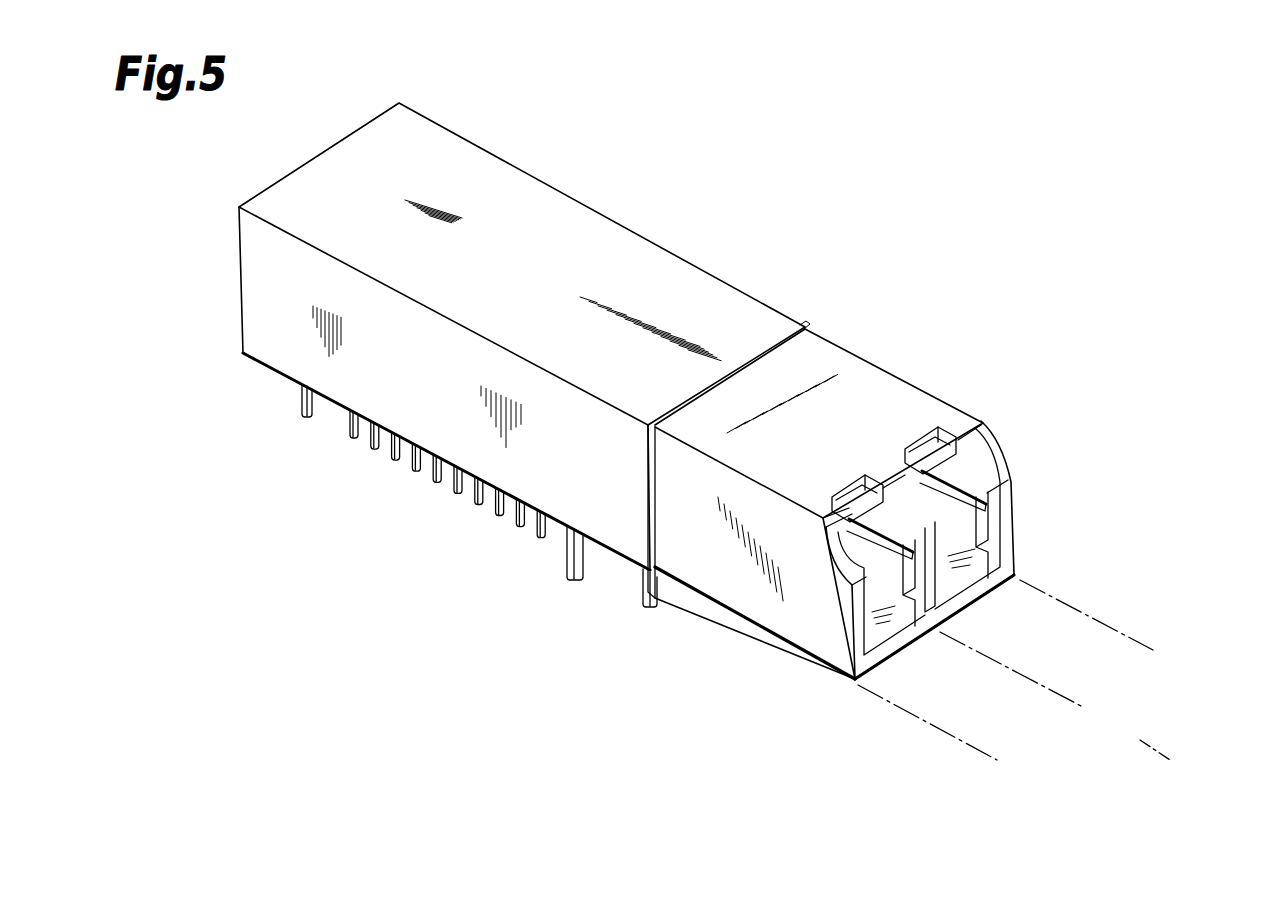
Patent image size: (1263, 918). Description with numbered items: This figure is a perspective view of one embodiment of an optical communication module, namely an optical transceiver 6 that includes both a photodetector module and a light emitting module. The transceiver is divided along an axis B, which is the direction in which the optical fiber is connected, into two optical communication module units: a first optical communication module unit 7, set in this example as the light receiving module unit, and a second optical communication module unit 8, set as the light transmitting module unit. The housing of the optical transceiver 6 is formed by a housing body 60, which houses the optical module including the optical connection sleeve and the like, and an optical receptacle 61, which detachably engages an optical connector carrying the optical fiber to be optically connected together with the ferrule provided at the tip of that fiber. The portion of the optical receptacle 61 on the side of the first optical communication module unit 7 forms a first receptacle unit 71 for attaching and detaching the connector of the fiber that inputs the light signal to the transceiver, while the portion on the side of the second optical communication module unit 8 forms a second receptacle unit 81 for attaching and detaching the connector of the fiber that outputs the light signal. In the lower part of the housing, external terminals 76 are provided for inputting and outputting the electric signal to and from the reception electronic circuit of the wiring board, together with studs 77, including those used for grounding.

The optical transceiver 6 is at (774, 262).
The housing body 60 is at (595, 237).
The optical receptacle 61 is at (908, 397).
The first receptacle unit 71 is at (890, 628).
The second receptacle unit 81 is at (960, 583).
The external terminals 76 is at (558, 548).
The studs 77 is at (302, 418).
The first optical communication module unit 7 is at (1083, 706).
The second optical communication module unit 8 is at (1165, 657).
The axis B is at (1150, 733).